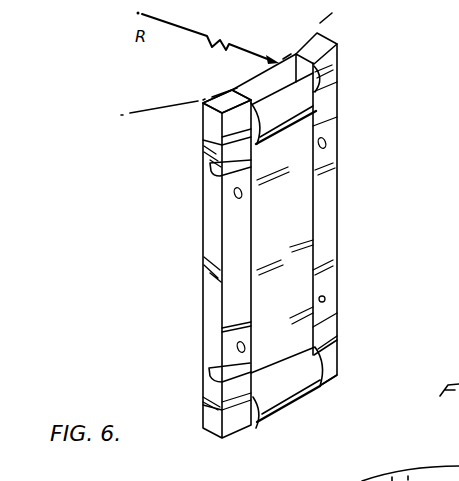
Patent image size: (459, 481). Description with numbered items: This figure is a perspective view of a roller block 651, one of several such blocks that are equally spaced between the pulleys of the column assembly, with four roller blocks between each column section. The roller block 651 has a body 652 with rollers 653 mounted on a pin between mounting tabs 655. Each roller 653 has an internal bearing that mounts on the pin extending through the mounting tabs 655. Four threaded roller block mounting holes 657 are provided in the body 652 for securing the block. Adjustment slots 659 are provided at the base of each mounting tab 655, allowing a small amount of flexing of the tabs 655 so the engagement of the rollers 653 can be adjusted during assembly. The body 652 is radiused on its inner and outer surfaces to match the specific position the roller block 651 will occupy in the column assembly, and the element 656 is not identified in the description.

The roller block 651 is at (192, 236).
The body 652 is at (329, 256).
The rollers 653 is at (314, 92).
The mounting tabs 655 is at (333, 55).
The bottom corner block 656 is at (333, 368).
The roller block mounting holes 657 is at (326, 297).
The adjustment slots 659 is at (333, 102).